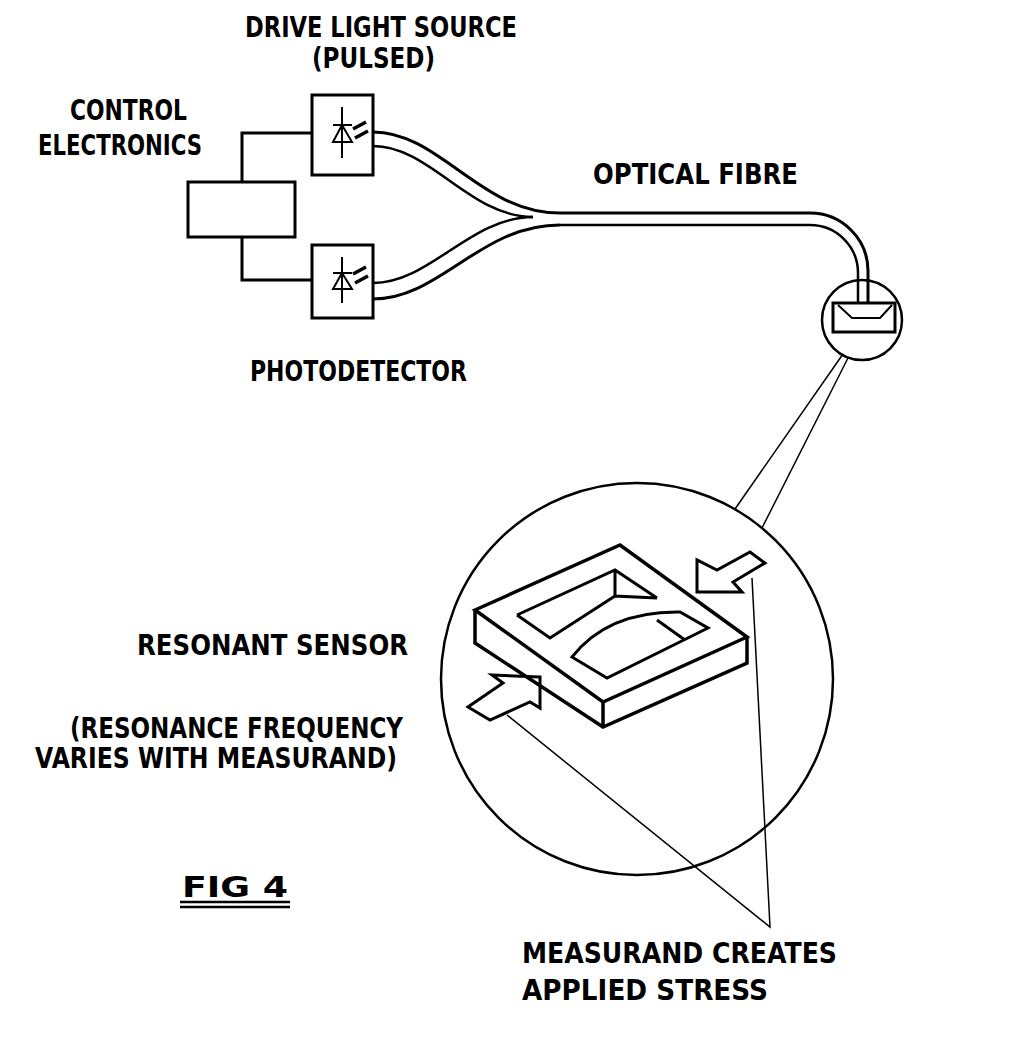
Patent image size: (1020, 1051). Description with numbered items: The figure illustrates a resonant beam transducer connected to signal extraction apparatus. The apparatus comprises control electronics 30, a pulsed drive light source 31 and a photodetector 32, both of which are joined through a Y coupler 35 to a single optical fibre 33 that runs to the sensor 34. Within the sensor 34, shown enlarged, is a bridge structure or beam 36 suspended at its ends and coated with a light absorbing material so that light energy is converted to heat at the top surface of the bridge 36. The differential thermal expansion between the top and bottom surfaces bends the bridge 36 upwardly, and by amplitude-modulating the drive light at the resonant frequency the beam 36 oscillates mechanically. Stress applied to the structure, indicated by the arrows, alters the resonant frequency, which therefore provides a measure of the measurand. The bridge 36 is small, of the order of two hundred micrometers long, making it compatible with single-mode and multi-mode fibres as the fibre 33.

The control electronics 30 is at (207, 237).
The drive light source 31 is at (312, 105).
The photodetector 32 is at (318, 318).
The optical fibre 33 is at (637, 226).
The sensor 34 is at (835, 316).
The Y coupler 35 is at (513, 252).
The bridge 36 is at (605, 618).